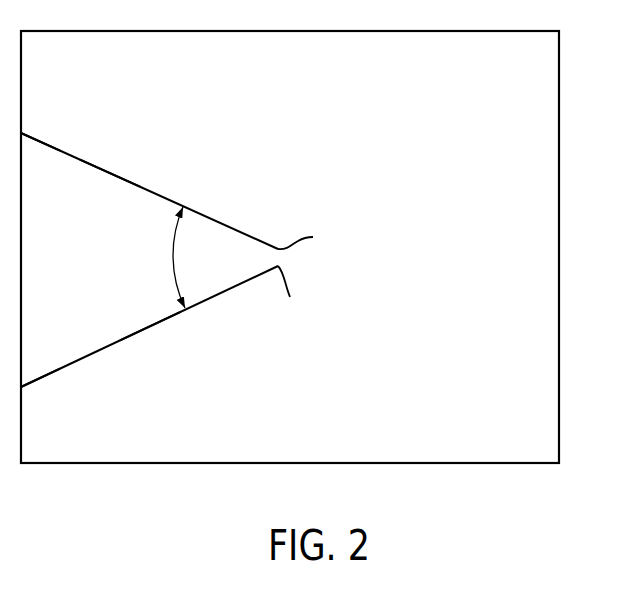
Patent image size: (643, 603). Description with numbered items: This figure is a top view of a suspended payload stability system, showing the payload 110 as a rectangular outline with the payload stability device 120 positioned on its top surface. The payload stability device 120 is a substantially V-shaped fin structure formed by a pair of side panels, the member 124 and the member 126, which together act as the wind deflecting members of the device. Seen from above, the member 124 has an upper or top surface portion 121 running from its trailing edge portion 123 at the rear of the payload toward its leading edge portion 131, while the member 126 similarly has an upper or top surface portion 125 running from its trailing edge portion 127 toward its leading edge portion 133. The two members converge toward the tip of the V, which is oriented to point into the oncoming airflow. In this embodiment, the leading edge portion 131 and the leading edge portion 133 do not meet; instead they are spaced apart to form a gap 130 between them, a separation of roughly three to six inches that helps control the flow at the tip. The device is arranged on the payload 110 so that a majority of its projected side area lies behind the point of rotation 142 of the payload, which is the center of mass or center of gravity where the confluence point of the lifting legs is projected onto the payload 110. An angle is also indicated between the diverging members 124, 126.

The payload 110 is at (559, 333).
The payload stability device 120 is at (312, 152).
The upper or top surface portion 121 is at (237, 228).
The trailing edge portion 123 is at (40, 138).
The member 124 is at (108, 171).
The upper or top surface portion 125 is at (218, 297).
The member 126 is at (150, 328).
The trailing edge portion 127 is at (21, 387).
The gap 130 is at (310, 262).
The leading edge portion 131 is at (309, 238).
The leading edge portion 133 is at (290, 295).
The point of rotation 142 is at (338, 287).